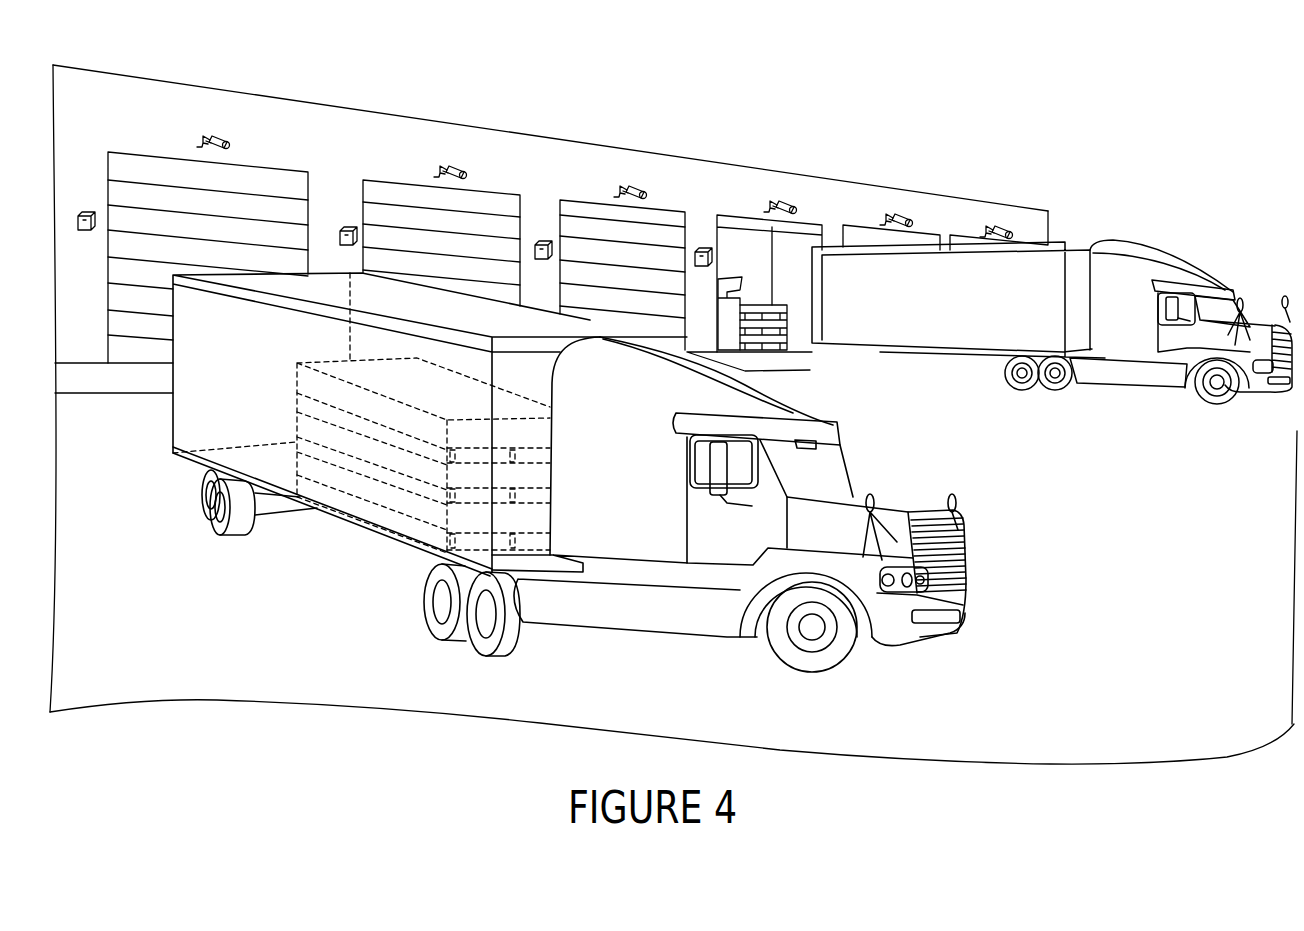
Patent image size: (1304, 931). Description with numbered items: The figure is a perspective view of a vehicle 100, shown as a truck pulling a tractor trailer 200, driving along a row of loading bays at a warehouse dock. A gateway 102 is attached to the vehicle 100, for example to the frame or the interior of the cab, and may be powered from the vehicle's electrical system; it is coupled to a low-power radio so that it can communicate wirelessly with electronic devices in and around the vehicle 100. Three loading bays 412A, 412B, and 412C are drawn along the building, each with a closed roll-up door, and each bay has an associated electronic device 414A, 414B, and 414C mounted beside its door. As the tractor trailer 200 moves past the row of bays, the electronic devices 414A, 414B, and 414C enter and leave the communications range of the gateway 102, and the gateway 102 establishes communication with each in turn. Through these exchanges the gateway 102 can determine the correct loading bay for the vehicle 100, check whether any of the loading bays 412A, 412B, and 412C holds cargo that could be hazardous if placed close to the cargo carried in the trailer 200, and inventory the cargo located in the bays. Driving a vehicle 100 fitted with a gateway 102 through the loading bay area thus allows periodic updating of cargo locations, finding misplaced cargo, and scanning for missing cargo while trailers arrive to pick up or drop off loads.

The vehicle 100 is at (729, 504).
The gateway 102 is at (812, 462).
The tractor trailer 200 is at (173, 433).
The loading bay 412A is at (268, 178).
The loading bay 412B is at (492, 198).
The loading bay 412C is at (672, 218).
The electronic device 414A is at (93, 217).
The electronic device 414B is at (348, 228).
The electronic device 414C is at (545, 243).